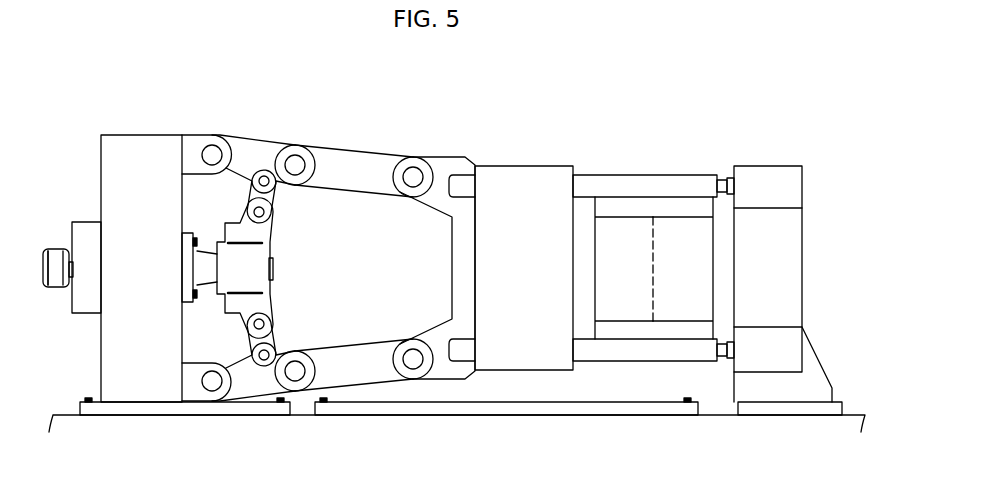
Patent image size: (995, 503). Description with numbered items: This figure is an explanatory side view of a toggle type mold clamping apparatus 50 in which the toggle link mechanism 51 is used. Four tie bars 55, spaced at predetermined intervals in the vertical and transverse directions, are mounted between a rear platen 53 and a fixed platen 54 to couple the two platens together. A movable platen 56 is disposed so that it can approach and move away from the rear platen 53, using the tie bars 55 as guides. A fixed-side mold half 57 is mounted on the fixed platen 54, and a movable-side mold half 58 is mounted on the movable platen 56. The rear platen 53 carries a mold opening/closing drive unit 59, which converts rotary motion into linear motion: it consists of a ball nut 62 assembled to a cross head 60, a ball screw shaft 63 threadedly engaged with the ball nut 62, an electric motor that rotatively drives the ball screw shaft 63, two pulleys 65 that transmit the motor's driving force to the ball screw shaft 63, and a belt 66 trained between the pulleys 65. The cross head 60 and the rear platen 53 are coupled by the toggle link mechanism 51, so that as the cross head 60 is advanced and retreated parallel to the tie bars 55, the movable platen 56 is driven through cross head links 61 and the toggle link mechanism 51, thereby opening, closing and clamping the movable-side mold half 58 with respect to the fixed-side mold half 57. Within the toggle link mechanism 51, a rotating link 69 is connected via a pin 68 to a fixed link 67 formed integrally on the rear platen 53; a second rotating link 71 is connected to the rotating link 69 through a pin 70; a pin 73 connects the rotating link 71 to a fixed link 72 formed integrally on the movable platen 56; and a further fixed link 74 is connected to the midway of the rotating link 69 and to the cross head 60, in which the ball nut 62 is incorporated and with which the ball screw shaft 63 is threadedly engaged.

The toggle type mold clamping apparatus 50 is at (474, 151).
The toggle link mechanism 51 is at (290, 137).
The rear platen 53 is at (140, 145).
The fixed platen 54 is at (770, 190).
The tie bars 55 is at (650, 187).
The movable platen 56 is at (530, 193).
The fixed-side mold half 57 is at (687, 242).
The movable-side mold half 58 is at (627, 242).
The mold opening/closing drive unit 59 is at (88, 237).
The cross head 60 is at (250, 257).
The cross head links 61 is at (271, 198).
The ball nut 62 is at (250, 280).
The ball screw shaft 63 is at (274, 266).
The pulleys 65 is at (43, 265).
The belt 66 is at (53, 278).
The fixed link 67 is at (190, 143).
The pin 68 is at (212, 153).
The rotating link 69 is at (262, 157).
The pin 70 is at (296, 163).
The rotating link 71 is at (368, 167).
The fixed link 72 is at (438, 165).
The pin 73 is at (412, 175).
The fixed link 74 is at (252, 182).